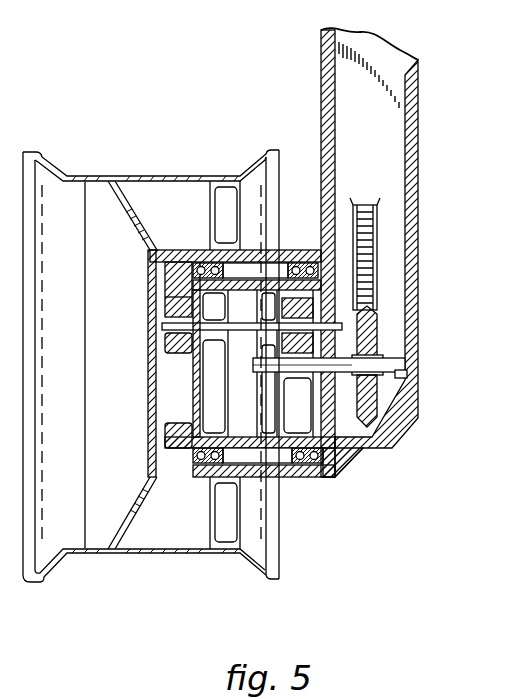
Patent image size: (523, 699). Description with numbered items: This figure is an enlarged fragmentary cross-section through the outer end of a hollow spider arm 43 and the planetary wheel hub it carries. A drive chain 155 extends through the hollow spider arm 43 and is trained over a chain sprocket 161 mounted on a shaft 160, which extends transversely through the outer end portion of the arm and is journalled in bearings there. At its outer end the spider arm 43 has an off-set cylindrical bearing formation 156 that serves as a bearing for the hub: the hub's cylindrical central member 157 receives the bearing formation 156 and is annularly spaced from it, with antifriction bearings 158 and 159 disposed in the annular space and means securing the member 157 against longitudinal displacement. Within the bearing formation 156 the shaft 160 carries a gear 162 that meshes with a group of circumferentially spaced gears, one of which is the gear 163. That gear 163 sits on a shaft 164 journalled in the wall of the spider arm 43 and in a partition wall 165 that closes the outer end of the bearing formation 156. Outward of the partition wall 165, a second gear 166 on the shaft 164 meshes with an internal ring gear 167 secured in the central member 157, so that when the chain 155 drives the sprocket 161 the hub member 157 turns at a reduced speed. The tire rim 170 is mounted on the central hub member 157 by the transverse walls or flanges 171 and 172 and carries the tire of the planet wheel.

The hollow spider arm 43 is at (418, 105).
The drive chain 155 is at (353, 205).
The off-set cylindrical bearing formation 156 is at (274, 275).
The cylindrical central hub member 157 is at (160, 282).
The antifriction bearing 158 is at (200, 464).
The antifriction bearing 159 is at (313, 464).
The shaft 160 is at (386, 357).
The chain sprocket 161 is at (380, 407).
The gear 162 is at (313, 376).
The gear 163 is at (282, 343).
The shaft 164 is at (162, 326).
The partition wall 165 is at (197, 403).
The second gear 166 is at (165, 343).
The internal ring gear 167 is at (165, 432).
The tire rim 170 is at (28, 151).
The transverse wall or flange 171 is at (211, 200).
The transverse wall or flange 172 is at (148, 247).